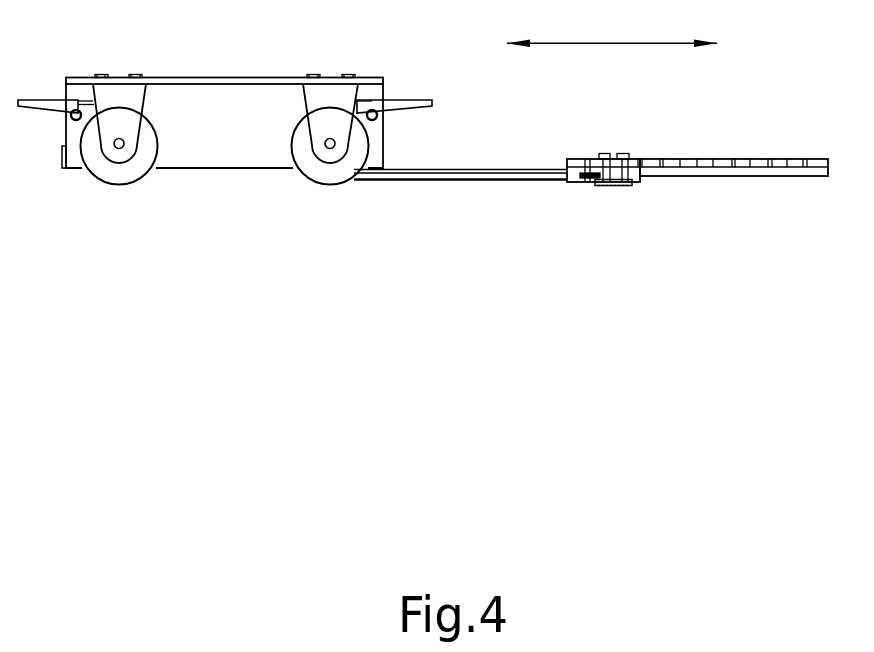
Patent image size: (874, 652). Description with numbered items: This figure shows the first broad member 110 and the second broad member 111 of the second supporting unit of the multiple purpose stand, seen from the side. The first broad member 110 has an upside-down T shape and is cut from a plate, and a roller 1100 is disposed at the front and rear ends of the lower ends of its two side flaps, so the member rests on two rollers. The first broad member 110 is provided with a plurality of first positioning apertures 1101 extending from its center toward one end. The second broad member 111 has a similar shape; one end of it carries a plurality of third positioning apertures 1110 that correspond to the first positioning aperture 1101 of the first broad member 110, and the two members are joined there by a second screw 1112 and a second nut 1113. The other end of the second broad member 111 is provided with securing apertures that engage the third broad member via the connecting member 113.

The first broad member 110 is at (257, 175).
The roller 1100 is at (112, 180).
The connecting member 113 is at (386, 184).
The second broad member 111 is at (792, 180).
The third positioning aperture 1110 is at (646, 157).
The second screw 1112 is at (602, 151).
The first positioning aperture 1101 is at (582, 178).
The second nut 1113 is at (622, 186).